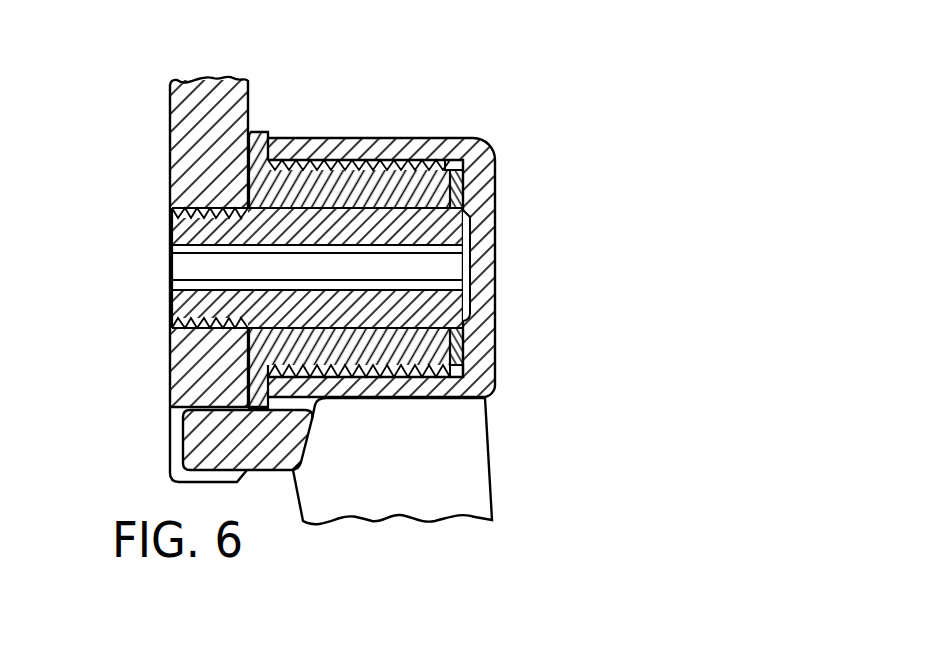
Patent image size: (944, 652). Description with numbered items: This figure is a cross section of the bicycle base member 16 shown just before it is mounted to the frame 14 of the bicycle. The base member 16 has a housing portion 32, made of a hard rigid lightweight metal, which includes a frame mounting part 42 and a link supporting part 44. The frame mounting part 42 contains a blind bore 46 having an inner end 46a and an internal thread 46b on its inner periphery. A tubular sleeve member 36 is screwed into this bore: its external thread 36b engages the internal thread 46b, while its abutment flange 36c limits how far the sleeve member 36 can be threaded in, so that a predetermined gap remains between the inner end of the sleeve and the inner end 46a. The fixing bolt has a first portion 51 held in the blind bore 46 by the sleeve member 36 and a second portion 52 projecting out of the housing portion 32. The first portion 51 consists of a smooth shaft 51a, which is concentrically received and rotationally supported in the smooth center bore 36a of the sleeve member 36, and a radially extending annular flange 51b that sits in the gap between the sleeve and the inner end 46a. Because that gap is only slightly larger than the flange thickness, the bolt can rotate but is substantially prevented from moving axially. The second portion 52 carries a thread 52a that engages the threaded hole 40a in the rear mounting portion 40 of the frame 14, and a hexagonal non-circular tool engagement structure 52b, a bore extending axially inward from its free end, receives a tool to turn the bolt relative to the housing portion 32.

The frame 14 is at (160, 102).
The base member 16 is at (334, 229).
The housing portion 32 is at (455, 124).
The sleeve member 36 is at (353, 216).
The center bore 36a is at (366, 210).
The external thread 36b is at (318, 158).
The abutment flange 36c is at (264, 130).
The rear mounting portion 40 is at (260, 316).
The threaded hole 40a is at (180, 226).
The frame mounting part 42 is at (427, 110).
The link supporting part 44 is at (491, 437).
The blind bore 46 is at (549, 267).
The inner end 46a is at (462, 262).
The internal thread 46b is at (595, 303).
The first portion 51 is at (365, 474).
The smooth shaft 51a is at (350, 330).
The annular flange 51b is at (455, 377).
The second portion 52 is at (241, 310).
The thread 52a is at (195, 325).
The non-circular tool engagement structure 52b is at (200, 285).